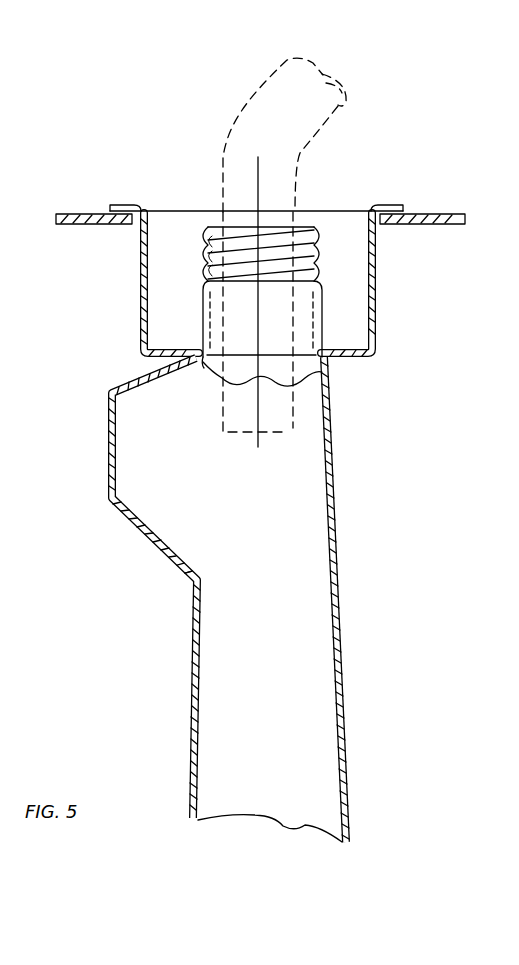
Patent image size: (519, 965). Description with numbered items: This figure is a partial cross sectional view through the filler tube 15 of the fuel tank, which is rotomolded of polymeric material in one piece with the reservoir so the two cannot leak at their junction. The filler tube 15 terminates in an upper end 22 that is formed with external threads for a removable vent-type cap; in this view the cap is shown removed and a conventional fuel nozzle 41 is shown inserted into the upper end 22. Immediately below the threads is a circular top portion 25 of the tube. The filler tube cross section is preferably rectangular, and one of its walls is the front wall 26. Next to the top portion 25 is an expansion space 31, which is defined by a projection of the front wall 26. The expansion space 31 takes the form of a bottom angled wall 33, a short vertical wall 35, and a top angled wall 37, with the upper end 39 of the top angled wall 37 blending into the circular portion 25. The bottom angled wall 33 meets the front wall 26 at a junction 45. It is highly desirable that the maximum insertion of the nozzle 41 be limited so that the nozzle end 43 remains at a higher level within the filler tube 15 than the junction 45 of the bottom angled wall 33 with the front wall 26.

The filler tube 15 is at (252, 599).
The upper end 22 is at (212, 228).
The circular top portion 25 is at (305, 308).
The front wall 26 is at (192, 682).
The expansion space 31 is at (157, 487).
The bottom angled wall 33 is at (160, 547).
The short vertical wall 35 is at (110, 447).
The top angled wall 37 is at (145, 380).
The upper end 39 is at (199, 368).
The fuel nozzle 41 is at (318, 393).
The nozzle end 43 is at (235, 434).
The junction 45 is at (203, 580).